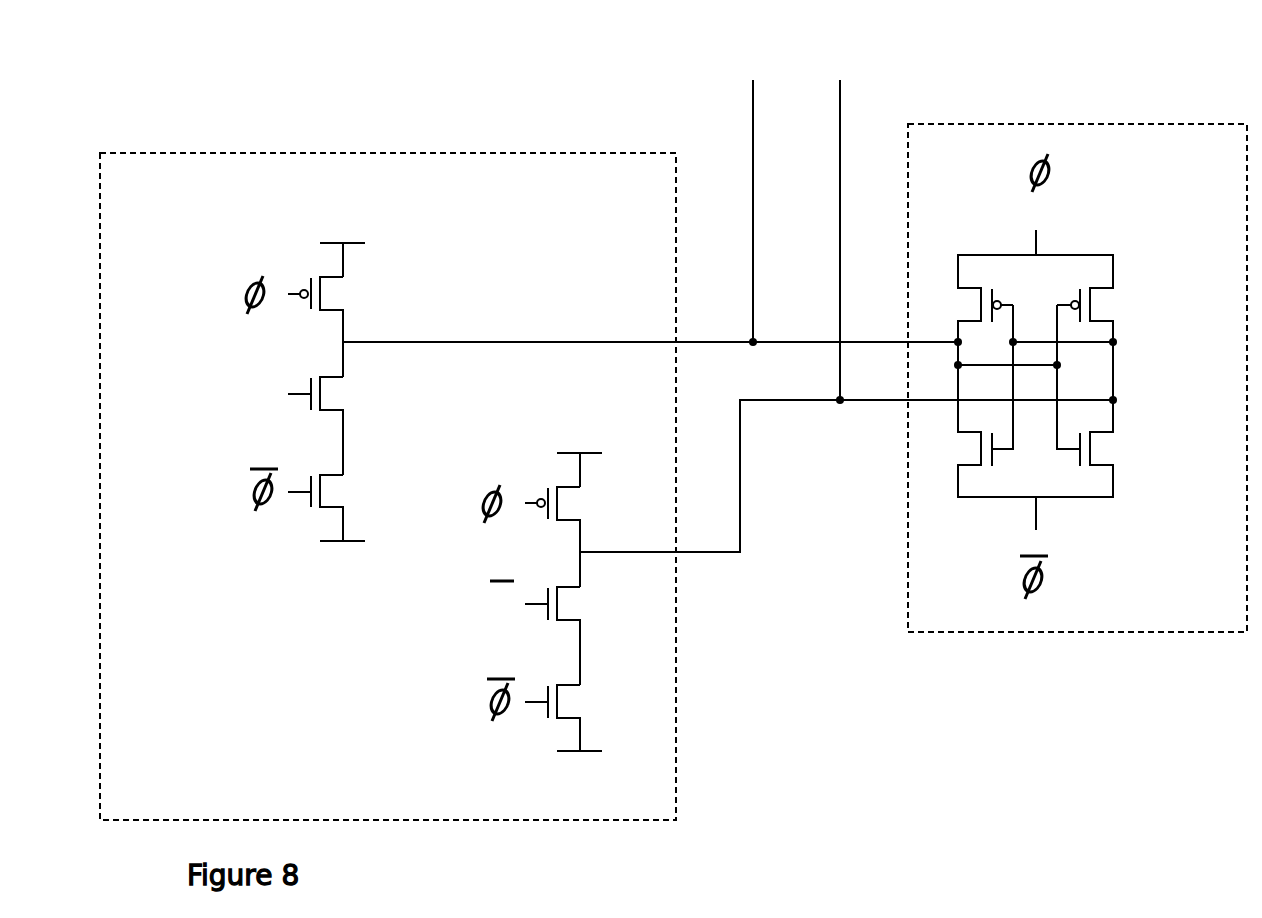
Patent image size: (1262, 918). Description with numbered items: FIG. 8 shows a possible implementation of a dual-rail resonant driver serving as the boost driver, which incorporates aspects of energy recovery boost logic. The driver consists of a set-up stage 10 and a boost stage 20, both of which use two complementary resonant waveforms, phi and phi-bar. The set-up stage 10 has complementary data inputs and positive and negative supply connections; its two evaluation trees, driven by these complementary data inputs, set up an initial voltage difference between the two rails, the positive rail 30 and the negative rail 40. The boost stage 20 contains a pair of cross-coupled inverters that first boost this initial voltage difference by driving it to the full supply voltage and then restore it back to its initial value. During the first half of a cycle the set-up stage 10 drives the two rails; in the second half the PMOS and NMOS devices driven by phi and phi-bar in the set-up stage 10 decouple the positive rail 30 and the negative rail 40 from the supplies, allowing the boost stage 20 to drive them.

The set-up stage 10 is at (606, 486).
The boost stage 20 is at (1077, 378).
The POS output line 30 is at (743, 186).
The NEG output line 40 is at (843, 215).